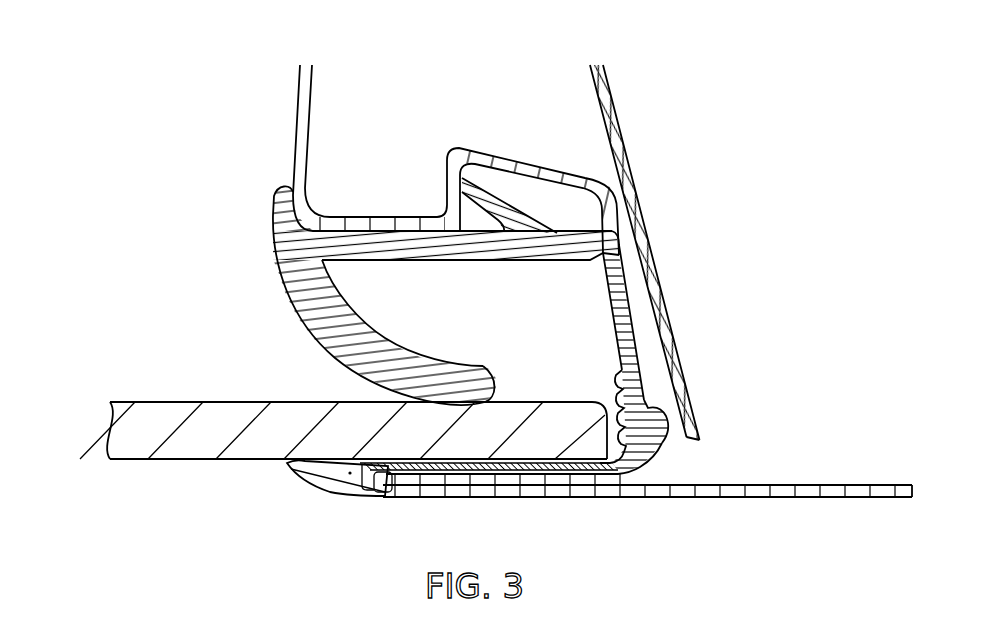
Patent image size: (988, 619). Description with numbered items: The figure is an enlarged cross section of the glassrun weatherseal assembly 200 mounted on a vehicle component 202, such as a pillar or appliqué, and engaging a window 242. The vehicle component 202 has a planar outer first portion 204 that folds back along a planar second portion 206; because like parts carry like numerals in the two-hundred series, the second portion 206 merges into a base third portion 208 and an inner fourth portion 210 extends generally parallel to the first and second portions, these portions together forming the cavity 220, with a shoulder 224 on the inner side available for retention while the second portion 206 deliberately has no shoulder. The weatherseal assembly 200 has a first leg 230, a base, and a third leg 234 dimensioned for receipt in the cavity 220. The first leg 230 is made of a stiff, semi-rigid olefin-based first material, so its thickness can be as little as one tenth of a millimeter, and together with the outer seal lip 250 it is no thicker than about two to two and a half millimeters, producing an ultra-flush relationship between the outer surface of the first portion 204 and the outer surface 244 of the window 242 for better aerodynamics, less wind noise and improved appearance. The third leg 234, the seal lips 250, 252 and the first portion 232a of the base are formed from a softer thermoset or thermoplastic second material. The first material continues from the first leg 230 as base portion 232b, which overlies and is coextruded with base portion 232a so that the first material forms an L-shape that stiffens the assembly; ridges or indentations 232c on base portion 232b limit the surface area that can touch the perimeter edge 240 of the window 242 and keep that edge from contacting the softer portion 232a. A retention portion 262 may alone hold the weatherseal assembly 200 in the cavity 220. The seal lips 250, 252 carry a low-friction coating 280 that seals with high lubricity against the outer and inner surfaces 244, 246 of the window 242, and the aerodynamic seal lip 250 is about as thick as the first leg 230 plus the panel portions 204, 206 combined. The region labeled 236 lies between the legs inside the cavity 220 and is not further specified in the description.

The weatherseal assembly 200 is at (130, 279).
The vehicle component 202 is at (647, 498).
The planar outer first portion of vehicle component 204 is at (822, 497).
The planar second portion of vehicle component 206 is at (557, 477).
The support strut 208 is at (667, 393).
The channel 210 is at (363, 217).
The cavity 220 is at (517, 293).
The upper wall 224 is at (448, 168).
The first leg 230 is at (483, 495).
The first portion of base 232a is at (623, 315).
The base portion 232b is at (667, 424).
The ridges or indentations 232c is at (620, 403).
The third leg 234 is at (445, 250).
The cavity 236 is at (575, 344).
The perimeter edge of window 240 is at (590, 443).
The window 242 is at (113, 438).
The outer surface of window 244 is at (187, 460).
The inner surface of window 246 is at (155, 400).
The outer seal lip 250 is at (335, 482).
The inner seal lip 252 is at (427, 360).
The retention portion 262 is at (512, 207).
The low-friction coating 280 is at (312, 330).